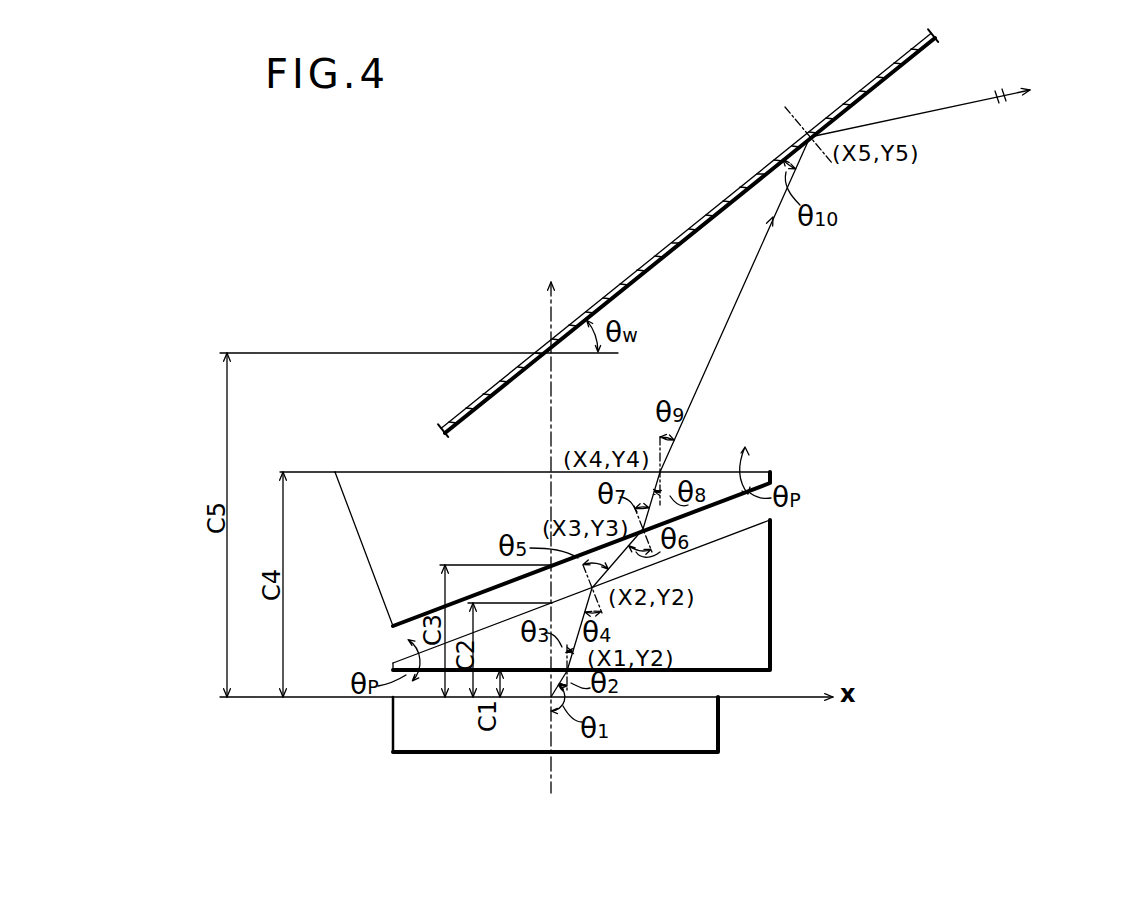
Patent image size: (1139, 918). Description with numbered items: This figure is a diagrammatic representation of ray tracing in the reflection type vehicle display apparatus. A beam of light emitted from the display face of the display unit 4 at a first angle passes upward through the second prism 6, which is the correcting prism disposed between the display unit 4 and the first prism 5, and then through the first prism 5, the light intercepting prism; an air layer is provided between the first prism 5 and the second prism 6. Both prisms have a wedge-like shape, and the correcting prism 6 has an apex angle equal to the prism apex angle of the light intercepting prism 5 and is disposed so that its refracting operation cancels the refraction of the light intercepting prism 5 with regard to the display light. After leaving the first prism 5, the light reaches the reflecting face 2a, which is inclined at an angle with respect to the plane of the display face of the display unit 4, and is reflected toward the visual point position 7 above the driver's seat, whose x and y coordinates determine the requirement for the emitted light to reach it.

The reflecting face 2a is at (652, 257).
The display unit 4 is at (407, 748).
The first prism 5 is at (388, 488).
The second prism 6 is at (762, 573).
The visual point position 7 is at (1032, 82).